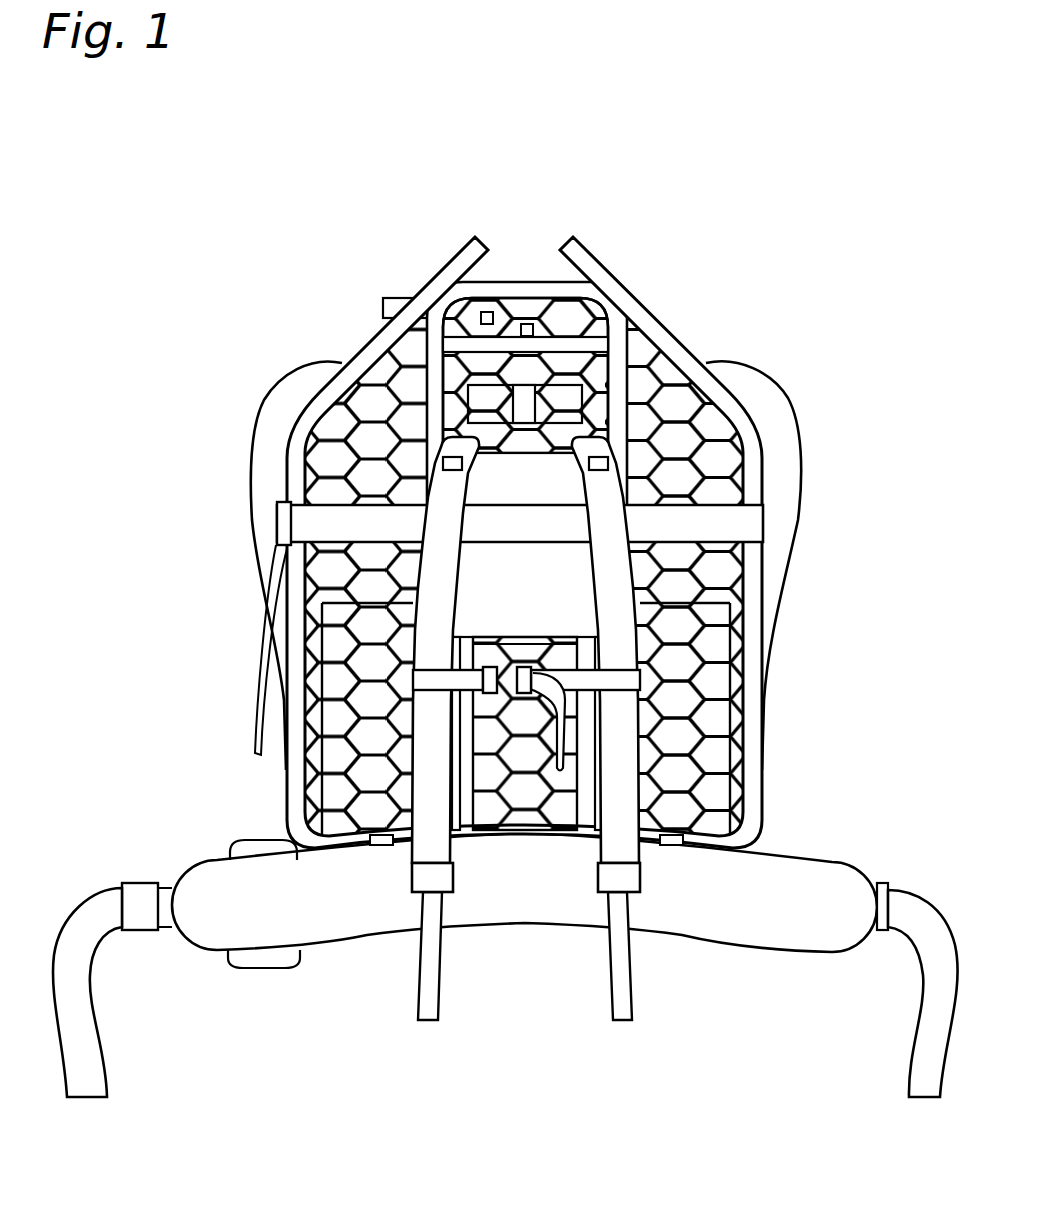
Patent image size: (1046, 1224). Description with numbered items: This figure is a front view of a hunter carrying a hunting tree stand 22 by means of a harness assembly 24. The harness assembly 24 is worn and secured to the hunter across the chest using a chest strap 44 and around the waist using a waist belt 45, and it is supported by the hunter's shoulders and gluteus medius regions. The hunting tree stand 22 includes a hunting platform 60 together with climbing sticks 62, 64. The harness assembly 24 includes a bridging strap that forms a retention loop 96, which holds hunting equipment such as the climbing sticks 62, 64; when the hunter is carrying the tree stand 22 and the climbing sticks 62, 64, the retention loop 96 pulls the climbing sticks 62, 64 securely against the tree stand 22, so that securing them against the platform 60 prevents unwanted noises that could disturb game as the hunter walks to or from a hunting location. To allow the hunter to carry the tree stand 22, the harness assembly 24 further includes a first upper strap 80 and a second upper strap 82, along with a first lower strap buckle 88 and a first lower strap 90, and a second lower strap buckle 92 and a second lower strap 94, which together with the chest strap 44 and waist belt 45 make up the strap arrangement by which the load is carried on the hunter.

The hunting tree stand 22 is at (444, 265).
The harness assembly 24 is at (412, 486).
The chest strap 44 is at (437, 680).
The waist belt 45 is at (213, 873).
The hunting platform 60 is at (455, 720).
The climbing stick 62 is at (595, 310).
The climbing stick 64 is at (399, 297).
The first upper strap 80 is at (617, 525).
The second upper strap 82 is at (437, 525).
The first lower strap buckle 88 is at (637, 873).
The first lower strap 90 is at (632, 1002).
The second lower strap buckle 92 is at (413, 873).
The second lower strap 94 is at (418, 1002).
The retention loop 96 is at (460, 437).